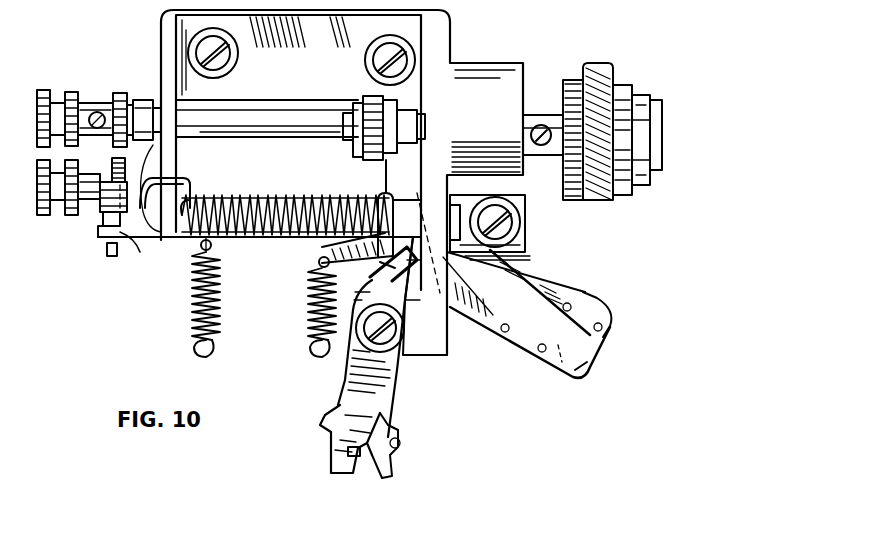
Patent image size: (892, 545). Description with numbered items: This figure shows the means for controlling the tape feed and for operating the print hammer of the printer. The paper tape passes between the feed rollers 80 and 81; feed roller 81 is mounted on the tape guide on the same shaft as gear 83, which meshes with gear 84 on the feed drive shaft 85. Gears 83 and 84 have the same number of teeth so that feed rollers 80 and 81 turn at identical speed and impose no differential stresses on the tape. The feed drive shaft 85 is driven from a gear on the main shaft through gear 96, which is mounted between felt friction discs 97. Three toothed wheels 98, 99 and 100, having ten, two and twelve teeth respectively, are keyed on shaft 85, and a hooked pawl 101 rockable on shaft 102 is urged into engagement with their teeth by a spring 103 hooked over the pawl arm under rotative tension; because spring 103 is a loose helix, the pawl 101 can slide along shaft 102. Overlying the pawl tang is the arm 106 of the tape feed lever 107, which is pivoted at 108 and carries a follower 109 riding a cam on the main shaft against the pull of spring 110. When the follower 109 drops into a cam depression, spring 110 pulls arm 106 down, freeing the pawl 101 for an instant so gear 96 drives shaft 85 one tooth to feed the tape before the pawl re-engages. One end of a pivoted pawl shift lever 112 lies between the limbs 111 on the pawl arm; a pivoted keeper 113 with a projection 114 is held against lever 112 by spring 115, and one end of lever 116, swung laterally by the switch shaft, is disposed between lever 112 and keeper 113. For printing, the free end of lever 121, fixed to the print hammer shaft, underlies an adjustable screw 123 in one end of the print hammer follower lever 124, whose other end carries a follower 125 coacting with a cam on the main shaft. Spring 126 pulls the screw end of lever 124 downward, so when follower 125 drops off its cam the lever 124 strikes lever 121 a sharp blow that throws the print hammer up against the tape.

The feed roller 80 is at (78, 92).
The feed roller 81 is at (75, 216).
The gear 83 is at (114, 160).
The gear 84 is at (118, 93).
The feed drive shaft 85 is at (255, 122).
The gear 96 is at (598, 63).
The felt friction discs 97 is at (612, 200).
The toothed wheel 98 is at (358, 102).
The toothed wheel 99 is at (370, 96).
The toothed wheel 100 is at (398, 96).
The hooked pawl 101 is at (392, 186).
The shaft 102 is at (186, 240).
The spring 103 is at (263, 238).
The arm 106 is at (345, 245).
The tape feed lever 107 is at (540, 271).
The pivot 108 is at (505, 229).
The follower 109 is at (600, 304).
The spring 110 is at (305, 331).
The limbs 111 is at (376, 278).
The pawl shift lever 112 is at (449, 300).
The keeper 113 is at (378, 412).
The projection 114 is at (360, 402).
The spring 115 is at (334, 439).
The lever 116 is at (352, 457).
The lever 121 is at (105, 255).
The adjustable screw 123 is at (120, 232).
The print hammer follower lever 124 is at (163, 161).
The follower 125 is at (585, 352).
The spring 126 is at (191, 321).